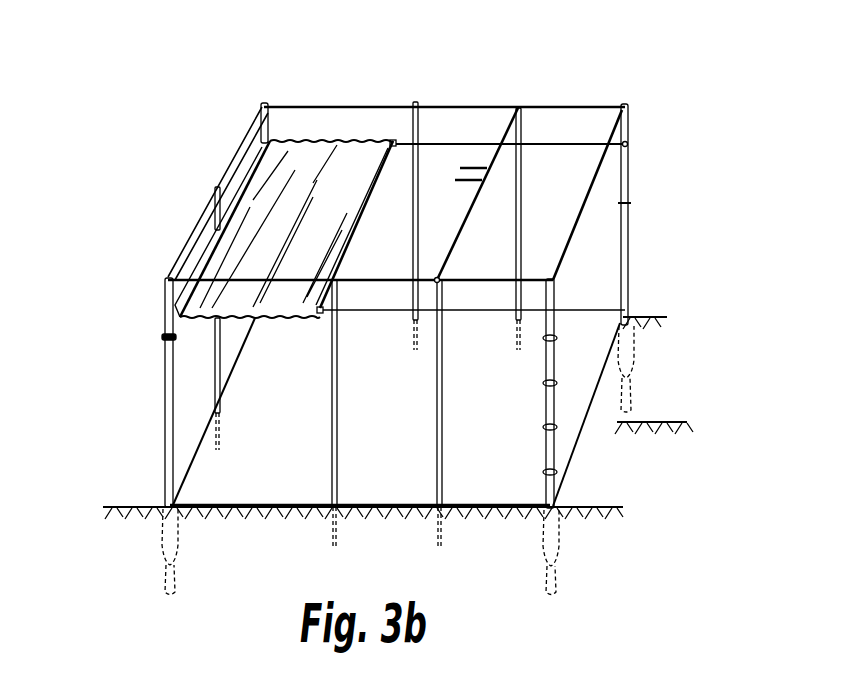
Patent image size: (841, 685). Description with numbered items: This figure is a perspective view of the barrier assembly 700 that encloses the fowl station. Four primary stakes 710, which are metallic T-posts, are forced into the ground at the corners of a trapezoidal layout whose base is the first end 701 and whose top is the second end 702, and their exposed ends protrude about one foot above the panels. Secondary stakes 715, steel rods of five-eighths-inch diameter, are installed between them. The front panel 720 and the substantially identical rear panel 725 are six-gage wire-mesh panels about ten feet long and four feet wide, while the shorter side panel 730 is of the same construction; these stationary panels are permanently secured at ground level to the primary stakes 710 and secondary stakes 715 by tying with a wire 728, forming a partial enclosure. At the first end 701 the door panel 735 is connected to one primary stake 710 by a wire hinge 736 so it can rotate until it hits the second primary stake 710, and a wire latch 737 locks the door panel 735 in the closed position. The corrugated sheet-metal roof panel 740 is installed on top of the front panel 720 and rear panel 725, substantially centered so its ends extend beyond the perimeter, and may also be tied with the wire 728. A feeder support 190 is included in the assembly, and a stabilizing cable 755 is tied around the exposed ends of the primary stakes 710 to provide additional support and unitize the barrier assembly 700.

The barrier assembly 700 is at (648, 92).
The first end 701 is at (663, 409).
The second end 702 is at (180, 225).
The primary stakes 710 is at (264, 102).
The secondary stakes 715 is at (213, 212).
The front panel 720 is at (368, 354).
The rear panel 725 is at (421, 122).
The wire 728 is at (393, 141).
The side panel 730 is at (160, 345).
The door panel 735 is at (544, 106).
The wire hinge 736 is at (546, 433).
The wire latch 737 is at (622, 203).
The roof panel 740 is at (310, 165).
The stabilizing cable 755 is at (242, 147).
The feeder support 190 is at (469, 218).